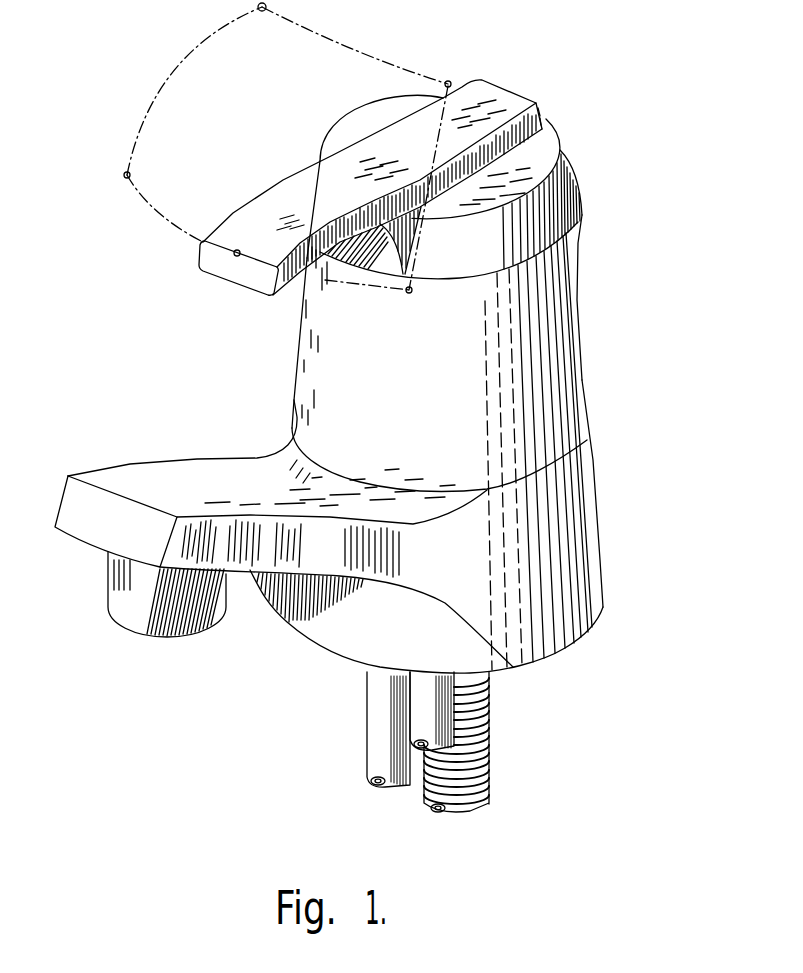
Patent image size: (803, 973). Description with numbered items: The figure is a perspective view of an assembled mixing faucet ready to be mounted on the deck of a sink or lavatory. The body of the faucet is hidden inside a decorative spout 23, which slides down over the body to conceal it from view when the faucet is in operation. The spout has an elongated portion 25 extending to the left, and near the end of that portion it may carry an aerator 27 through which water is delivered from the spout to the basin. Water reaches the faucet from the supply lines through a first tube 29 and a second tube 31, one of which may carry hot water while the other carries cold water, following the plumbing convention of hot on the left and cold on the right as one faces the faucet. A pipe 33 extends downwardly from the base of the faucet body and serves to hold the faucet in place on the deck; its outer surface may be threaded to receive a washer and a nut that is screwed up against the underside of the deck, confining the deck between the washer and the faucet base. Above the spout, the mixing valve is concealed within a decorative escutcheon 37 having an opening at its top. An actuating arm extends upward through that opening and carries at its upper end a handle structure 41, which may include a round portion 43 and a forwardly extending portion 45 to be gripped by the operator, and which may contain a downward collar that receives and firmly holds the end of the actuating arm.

The handle structure 41 is at (513, 92).
The round portion 43 is at (581, 186).
The decorative escutcheon 37 is at (578, 318).
The decorative spout 23 is at (597, 514).
The elongated portion 25 is at (148, 462).
The aerator 27 is at (108, 597).
The forwardly extending portion 45 is at (228, 272).
The first tube 29 is at (368, 708).
The second tube 31 is at (418, 722).
The pipe 33 is at (490, 740).